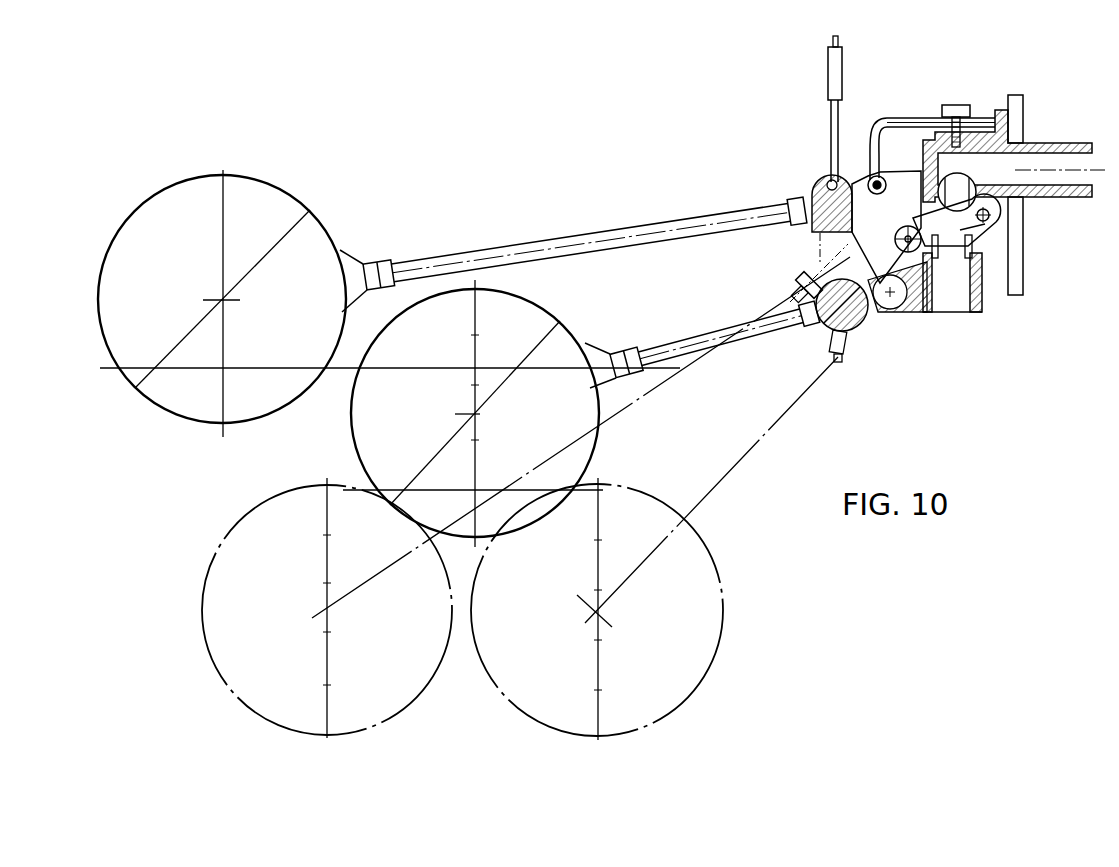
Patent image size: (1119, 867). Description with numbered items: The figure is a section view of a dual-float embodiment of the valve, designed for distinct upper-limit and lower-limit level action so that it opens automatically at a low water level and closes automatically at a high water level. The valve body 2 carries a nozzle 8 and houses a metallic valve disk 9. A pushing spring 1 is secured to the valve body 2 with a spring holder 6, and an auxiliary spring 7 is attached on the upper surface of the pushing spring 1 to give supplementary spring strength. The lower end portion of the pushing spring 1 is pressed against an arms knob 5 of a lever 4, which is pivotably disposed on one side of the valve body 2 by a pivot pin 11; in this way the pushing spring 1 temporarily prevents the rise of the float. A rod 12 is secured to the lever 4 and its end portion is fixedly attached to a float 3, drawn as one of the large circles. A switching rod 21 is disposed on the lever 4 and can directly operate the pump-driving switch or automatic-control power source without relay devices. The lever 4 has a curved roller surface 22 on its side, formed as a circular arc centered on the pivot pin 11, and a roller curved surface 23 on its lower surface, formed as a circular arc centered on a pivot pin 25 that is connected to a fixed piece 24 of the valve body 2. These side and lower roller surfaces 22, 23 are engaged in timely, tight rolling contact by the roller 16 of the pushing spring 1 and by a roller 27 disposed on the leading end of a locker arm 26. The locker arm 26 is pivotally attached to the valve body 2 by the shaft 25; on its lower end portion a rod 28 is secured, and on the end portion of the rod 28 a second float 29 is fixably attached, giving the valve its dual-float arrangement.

The pushing spring 1 is at (880, 140).
The valve body 2 is at (1008, 128).
The float 3 is at (293, 193).
The lever 4 is at (980, 240).
The arms knob 5 is at (905, 176).
The spring holder 6 is at (947, 108).
The auxiliary spring 7 is at (908, 118).
The nozzle 8 is at (957, 178).
The metallic valve disk 9 is at (992, 213).
The pivot pin 11 is at (973, 227).
The rod 12 is at (525, 244).
The roller 16 is at (826, 180).
The switching rod 21 is at (829, 117).
The curved roller surface 22 is at (831, 222).
The roller curved surface 23 is at (815, 257).
The fixed piece 24 is at (937, 313).
The pivot pin (shaft) 25 is at (882, 312).
The locker arm 26 is at (895, 266).
The roller 27 is at (980, 287).
The rod 28 is at (737, 347).
The float 29 is at (662, 505).